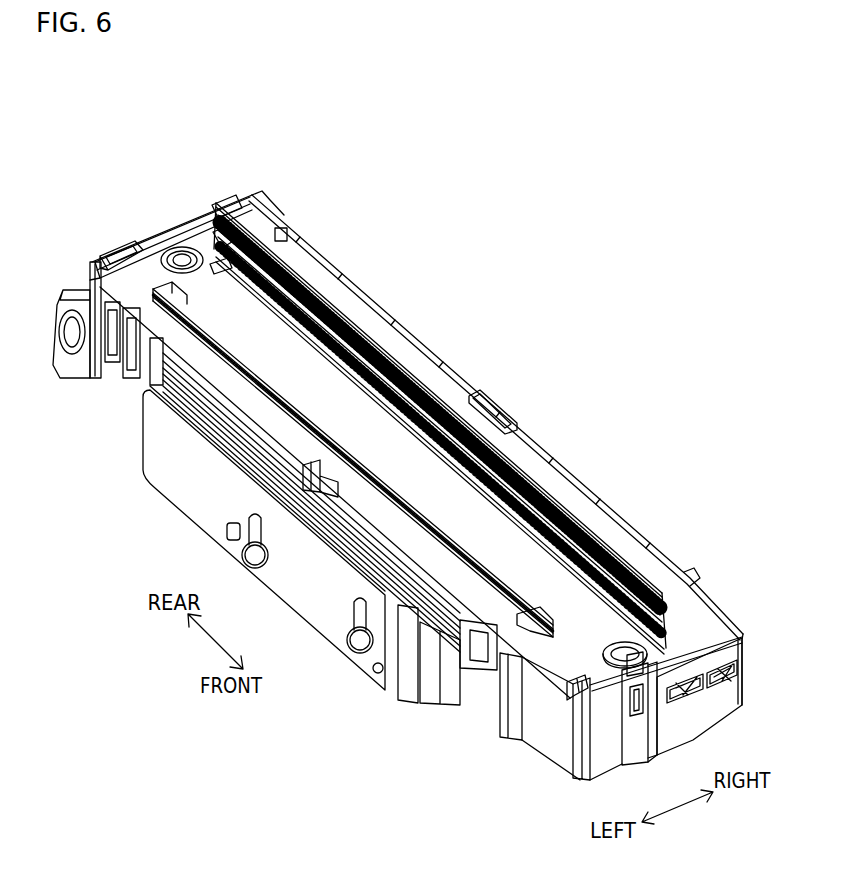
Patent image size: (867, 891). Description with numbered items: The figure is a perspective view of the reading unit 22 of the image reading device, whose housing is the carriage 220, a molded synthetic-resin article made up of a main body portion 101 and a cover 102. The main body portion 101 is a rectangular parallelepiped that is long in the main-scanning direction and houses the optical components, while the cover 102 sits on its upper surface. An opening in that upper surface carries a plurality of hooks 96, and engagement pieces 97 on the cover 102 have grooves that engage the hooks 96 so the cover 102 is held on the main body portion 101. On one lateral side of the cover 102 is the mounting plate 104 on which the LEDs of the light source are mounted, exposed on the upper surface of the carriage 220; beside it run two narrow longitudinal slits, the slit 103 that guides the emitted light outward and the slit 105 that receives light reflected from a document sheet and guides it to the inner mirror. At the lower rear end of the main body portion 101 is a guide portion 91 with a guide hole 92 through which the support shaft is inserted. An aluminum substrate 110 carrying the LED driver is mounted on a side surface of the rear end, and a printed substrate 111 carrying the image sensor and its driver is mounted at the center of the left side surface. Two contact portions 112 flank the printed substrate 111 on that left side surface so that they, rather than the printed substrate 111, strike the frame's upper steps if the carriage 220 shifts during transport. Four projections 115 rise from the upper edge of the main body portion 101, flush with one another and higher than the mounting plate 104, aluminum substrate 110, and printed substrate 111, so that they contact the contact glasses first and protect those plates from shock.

The reading unit 22 is at (375, 236).
The guide portion 91 is at (56, 347).
The guide hole 92 is at (62, 325).
The hooks 96 is at (132, 352).
The engagement pieces 97 is at (117, 362).
The main body portion 101 is at (537, 733).
The cover 102 is at (560, 578).
The slit 103 is at (554, 517).
The mounting plate 104 is at (420, 356).
The slit 105 is at (264, 388).
The aluminum substrate 110 is at (170, 229).
The printed substrate 111 is at (330, 633).
The contact portions 112 is at (105, 364).
The projections 115 is at (93, 277).
The carriage 220 is at (394, 314).